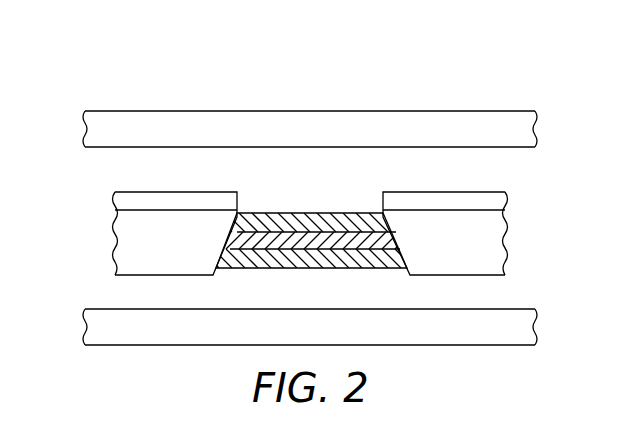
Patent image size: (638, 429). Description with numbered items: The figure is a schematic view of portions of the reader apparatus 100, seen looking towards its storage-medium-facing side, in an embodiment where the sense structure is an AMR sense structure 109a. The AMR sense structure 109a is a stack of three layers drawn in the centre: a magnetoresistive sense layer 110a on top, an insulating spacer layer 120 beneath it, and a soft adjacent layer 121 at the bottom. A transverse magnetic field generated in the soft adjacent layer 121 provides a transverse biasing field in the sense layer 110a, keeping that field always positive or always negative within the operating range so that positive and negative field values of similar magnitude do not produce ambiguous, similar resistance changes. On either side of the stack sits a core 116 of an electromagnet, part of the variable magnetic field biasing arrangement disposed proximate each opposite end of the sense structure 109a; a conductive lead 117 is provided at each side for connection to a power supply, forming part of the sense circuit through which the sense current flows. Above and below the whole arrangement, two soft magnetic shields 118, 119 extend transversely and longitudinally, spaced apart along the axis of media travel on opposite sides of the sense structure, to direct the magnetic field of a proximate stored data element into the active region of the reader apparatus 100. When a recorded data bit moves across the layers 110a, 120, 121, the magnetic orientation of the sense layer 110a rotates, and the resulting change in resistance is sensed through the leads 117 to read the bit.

The reader apparatus 100 is at (95, 255).
The AMR sense structure 109a is at (335, 210).
The magnetoresistive sense layer 110a is at (263, 212).
The core 116 is at (310, 233).
The conductive lead 117 is at (116, 197).
The shield 118 is at (107, 111).
The shield 119 is at (110, 345).
The insulating spacer layer 120 is at (353, 268).
The soft adjacent layer 121 is at (268, 268).